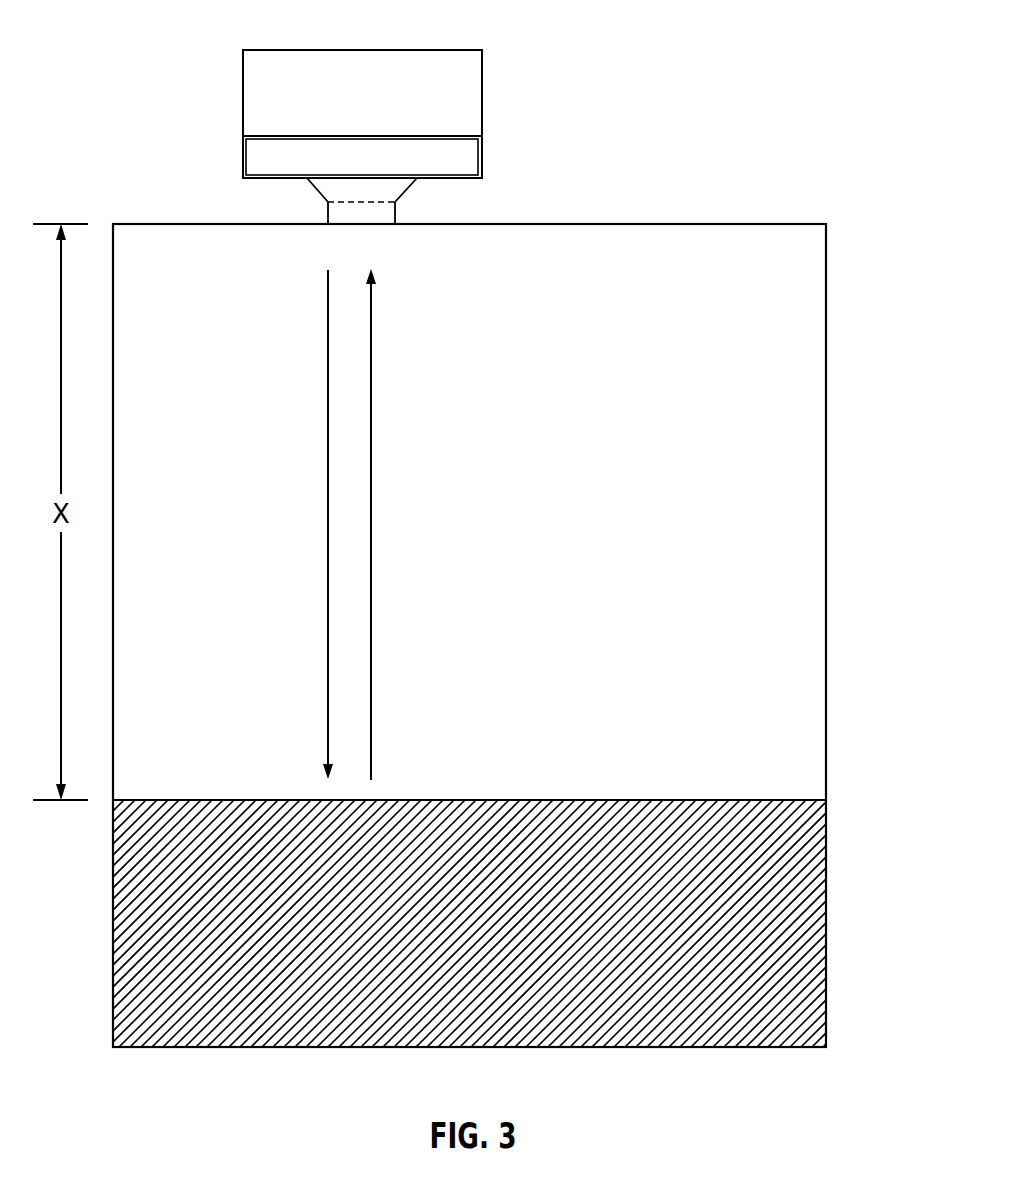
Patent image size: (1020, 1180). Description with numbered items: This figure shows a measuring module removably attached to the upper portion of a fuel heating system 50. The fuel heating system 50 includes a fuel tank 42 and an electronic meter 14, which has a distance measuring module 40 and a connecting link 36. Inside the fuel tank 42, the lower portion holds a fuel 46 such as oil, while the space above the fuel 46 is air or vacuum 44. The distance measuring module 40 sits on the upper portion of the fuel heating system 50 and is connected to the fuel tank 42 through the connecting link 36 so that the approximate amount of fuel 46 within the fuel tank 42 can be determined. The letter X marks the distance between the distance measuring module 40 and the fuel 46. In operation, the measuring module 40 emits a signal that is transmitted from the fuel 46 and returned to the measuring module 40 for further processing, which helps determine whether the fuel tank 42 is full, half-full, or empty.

The electronic meter 14 is at (450, 50).
The distance measuring module 40 is at (243, 157).
The connecting link 36 is at (396, 202).
The fuel heating system 50 is at (685, 84).
The fuel tank 42 is at (827, 318).
The air or vacuum 44 is at (785, 487).
The fuel 46 is at (397, 382).